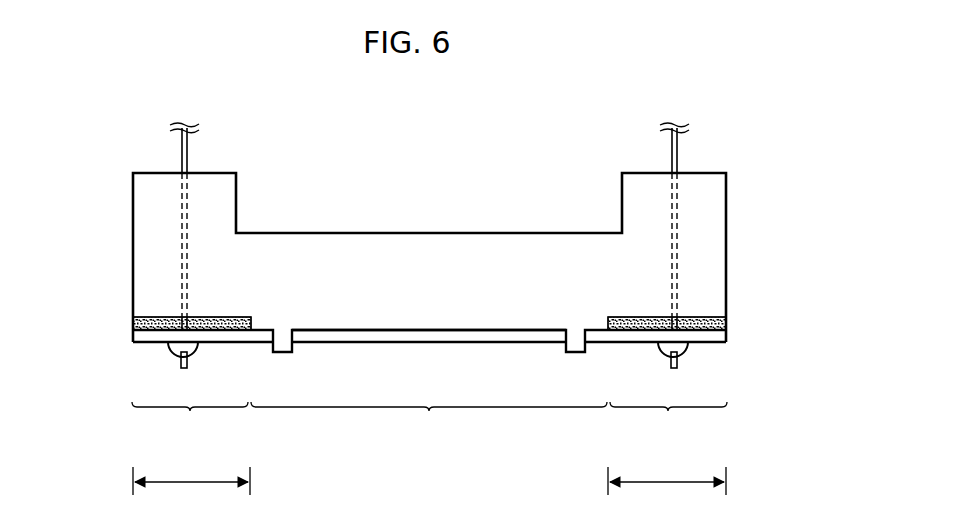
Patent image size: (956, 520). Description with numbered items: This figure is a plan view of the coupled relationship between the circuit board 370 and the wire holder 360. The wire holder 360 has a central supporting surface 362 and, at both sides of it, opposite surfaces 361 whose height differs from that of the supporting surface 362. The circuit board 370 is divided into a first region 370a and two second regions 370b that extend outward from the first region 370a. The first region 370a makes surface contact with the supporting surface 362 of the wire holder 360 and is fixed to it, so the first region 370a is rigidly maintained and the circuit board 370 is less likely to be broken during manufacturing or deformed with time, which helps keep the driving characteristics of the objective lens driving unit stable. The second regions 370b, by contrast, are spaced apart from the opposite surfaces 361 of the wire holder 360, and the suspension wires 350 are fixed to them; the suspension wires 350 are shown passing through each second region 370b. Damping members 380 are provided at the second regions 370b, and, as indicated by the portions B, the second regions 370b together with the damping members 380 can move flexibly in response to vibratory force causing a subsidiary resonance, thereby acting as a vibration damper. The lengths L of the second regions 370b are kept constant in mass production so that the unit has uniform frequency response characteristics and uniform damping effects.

The suspension wire 350 is at (181, 151).
The wire holder 360 is at (727, 244).
The opposite surface 361 is at (220, 315).
The supporting surface 362 is at (488, 328).
The circuit board 370 is at (513, 343).
The first region 370a is at (429, 417).
The second region 370b is at (429, 418).
The damping member 380 is at (133, 321).
The portion B is at (156, 356).
The length L is at (429, 476).